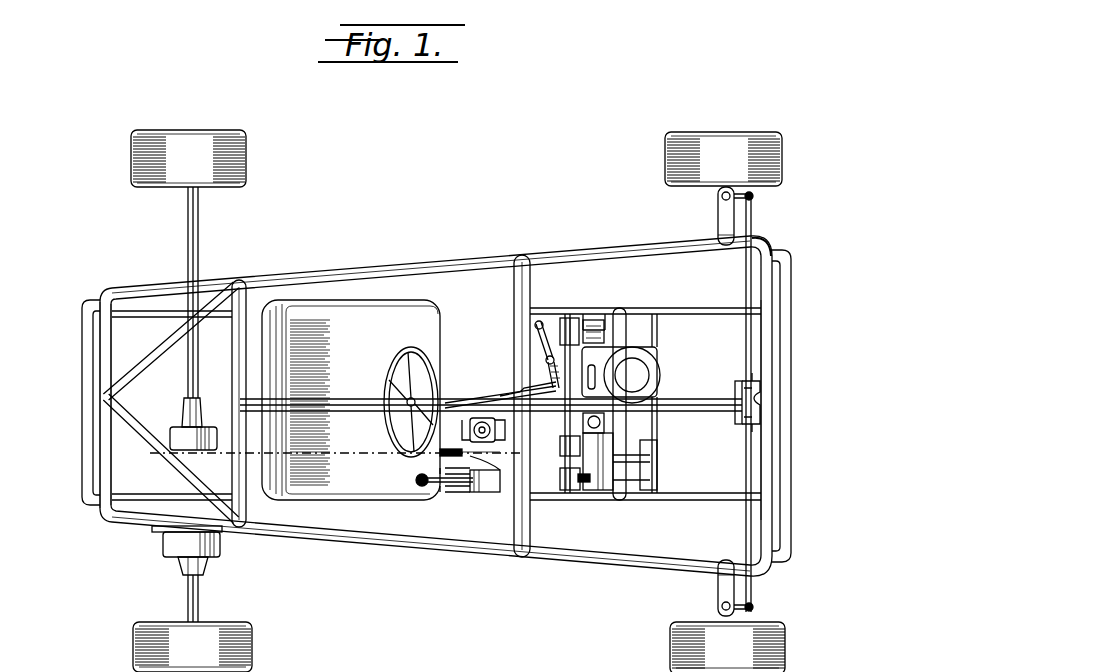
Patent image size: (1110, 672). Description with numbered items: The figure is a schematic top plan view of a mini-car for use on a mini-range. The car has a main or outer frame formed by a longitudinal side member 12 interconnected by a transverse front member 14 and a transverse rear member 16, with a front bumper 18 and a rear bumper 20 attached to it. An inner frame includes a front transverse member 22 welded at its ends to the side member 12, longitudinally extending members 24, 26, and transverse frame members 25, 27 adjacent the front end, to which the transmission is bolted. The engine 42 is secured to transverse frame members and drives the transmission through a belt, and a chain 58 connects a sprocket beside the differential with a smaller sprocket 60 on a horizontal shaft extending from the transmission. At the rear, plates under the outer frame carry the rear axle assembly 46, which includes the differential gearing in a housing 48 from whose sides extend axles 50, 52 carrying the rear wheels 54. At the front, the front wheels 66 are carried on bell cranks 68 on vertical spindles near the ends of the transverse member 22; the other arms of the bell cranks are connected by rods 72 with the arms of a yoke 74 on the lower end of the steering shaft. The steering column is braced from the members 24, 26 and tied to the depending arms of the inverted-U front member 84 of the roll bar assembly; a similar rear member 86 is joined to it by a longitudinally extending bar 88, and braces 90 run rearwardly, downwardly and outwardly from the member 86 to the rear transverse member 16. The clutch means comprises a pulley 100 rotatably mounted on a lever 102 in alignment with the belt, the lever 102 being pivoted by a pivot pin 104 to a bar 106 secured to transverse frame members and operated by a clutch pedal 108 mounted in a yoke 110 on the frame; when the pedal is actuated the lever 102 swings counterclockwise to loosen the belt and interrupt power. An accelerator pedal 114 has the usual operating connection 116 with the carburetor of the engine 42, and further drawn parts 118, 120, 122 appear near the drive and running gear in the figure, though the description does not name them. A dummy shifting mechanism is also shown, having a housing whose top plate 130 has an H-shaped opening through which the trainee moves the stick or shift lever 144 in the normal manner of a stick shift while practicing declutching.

The longitudinal side member 12 is at (402, 270).
The transverse front member 14 is at (766, 248).
The transverse rear member 16 is at (100, 460).
The front bumper 18 is at (791, 330).
The rear bumper 20 is at (82, 368).
The front transverse member 22 is at (742, 520).
The longitudinally extending member 24 is at (640, 500).
The transverse frame member 25 is at (660, 330).
The longitudinally extending member 26 is at (640, 308).
The transverse frame member 27 is at (589, 314).
The engine 42 is at (650, 366).
The rear axle assembly 46 is at (150, 434).
The differential housing 48 is at (178, 410).
The axle 50 is at (188, 593).
The axle 52 is at (200, 228).
The rear wheel 54 is at (247, 151).
The chain 58 is at (365, 465).
The sprocket 60 is at (507, 496).
The front wheel 66 is at (766, 140).
The bell crank 68 is at (718, 612).
The rod 72 is at (753, 587).
The yoke 74 is at (765, 400).
The front member of roll bar assembly 84 is at (533, 263).
The rear member of roll bar assembly 86 is at (252, 293).
The longitudinally extending bar 88 is at (380, 671).
The brace 90 is at (141, 366).
The pulley 100 is at (556, 390).
The lever 102 is at (548, 378).
The pivot pin 104 is at (540, 346).
The bar 106 is at (546, 358).
The clutch pedal 108 is at (573, 318).
The brake actuator 110 is at (602, 318).
The accelerator pedal 114 is at (581, 495).
The operating connection 116 is at (615, 447).
The sprocket 118 is at (565, 470).
The drive shaft 120 is at (650, 482).
The front hub 122 is at (164, 545).
The top plate 130 is at (476, 498).
The shift lever 144 is at (438, 492).